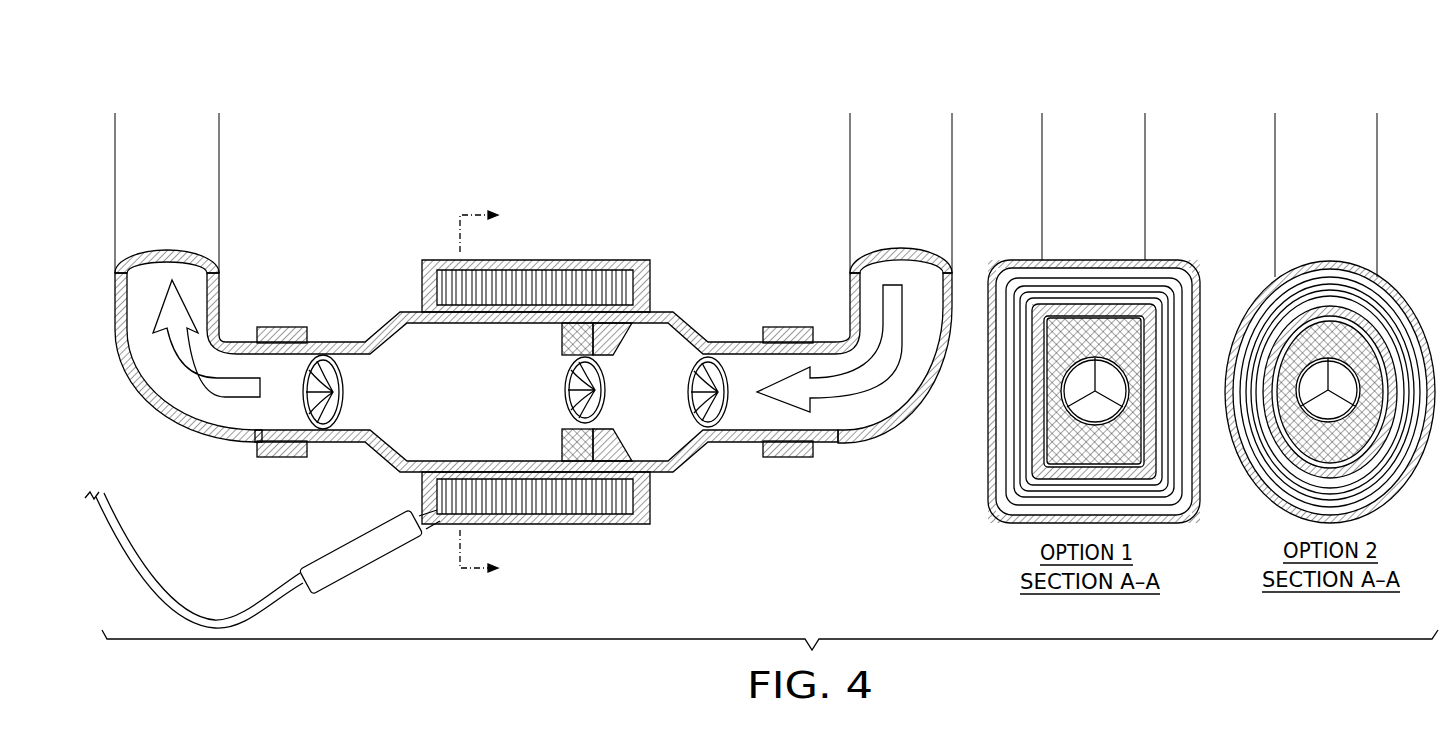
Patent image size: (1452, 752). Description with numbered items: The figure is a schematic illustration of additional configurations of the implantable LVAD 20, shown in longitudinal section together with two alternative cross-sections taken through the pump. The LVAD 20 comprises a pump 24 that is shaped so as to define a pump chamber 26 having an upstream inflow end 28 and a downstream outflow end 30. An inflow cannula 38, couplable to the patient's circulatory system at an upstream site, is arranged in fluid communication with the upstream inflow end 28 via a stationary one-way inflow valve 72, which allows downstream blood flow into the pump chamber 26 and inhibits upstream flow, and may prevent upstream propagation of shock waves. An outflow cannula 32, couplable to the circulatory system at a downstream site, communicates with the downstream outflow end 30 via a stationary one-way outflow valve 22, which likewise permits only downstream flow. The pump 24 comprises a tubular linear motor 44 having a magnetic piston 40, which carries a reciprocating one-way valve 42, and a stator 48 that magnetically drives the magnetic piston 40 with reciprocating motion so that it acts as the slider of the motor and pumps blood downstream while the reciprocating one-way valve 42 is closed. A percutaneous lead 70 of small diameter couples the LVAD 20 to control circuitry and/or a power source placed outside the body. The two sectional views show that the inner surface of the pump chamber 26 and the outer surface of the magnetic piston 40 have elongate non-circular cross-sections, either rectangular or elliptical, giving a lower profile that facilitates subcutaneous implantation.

The implantable LVAD 20 is at (318, 100).
The stationary one-way outflow valve 22 is at (332, 355).
The pump 24 is at (672, 233).
The pump chamber 26 is at (472, 396).
The upstream inflow end 28 is at (818, 425).
The downstream outflow end 30 is at (268, 417).
The outflow cannula 32 is at (208, 207).
The inflow cannula 38 is at (918, 407).
The magnetic piston 40 is at (560, 362).
The reciprocating one-way valve 42 is at (575, 410).
The tubular linear motor 44 is at (680, 278).
The stator 48 is at (570, 283).
The percutaneous lead 70 is at (355, 566).
The stationary one-way inflow valve 72 is at (711, 356).